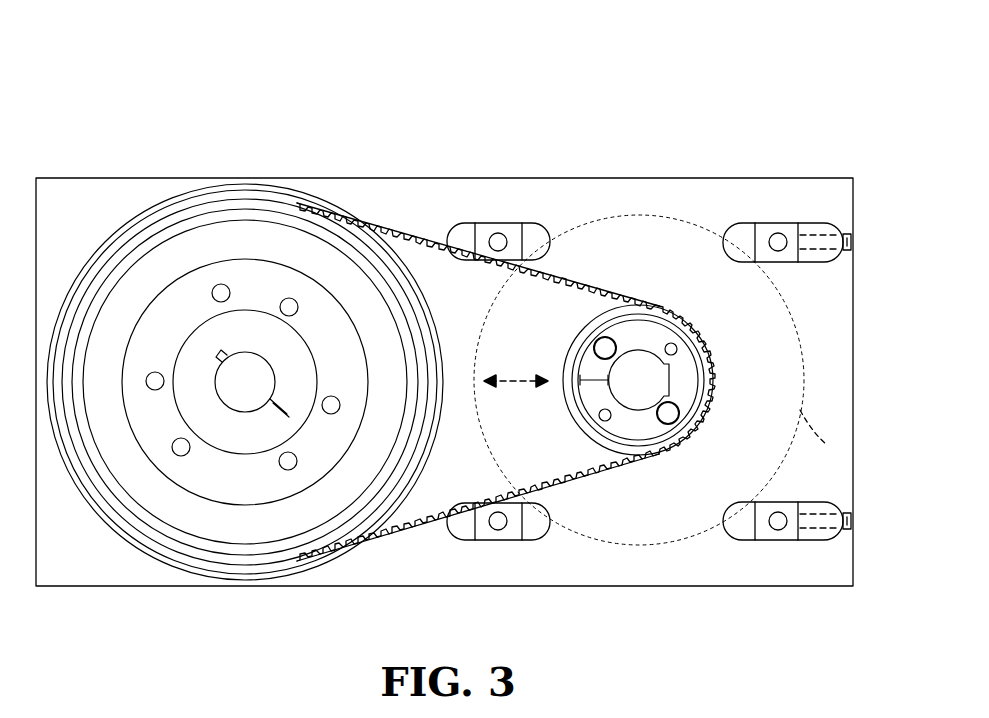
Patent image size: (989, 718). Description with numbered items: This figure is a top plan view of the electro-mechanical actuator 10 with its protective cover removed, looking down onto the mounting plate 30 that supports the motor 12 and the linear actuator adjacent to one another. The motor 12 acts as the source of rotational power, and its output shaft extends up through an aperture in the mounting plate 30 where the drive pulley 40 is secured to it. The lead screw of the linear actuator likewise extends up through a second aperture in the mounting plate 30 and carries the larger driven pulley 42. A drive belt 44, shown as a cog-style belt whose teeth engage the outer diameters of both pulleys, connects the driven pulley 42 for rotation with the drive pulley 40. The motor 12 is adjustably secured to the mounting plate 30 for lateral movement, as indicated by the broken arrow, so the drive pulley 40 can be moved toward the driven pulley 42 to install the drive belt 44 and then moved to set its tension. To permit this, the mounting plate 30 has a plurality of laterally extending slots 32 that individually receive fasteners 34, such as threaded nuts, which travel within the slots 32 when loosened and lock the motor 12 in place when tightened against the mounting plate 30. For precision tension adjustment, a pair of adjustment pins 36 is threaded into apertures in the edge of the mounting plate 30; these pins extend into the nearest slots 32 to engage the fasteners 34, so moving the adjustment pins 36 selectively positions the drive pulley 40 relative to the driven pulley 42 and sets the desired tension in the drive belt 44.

The electro-mechanical actuator 10 is at (648, 62).
The motor 12 is at (818, 438).
The mounting plate 30 is at (641, 210).
The slots 32 is at (548, 246).
The fasteners 34 is at (486, 243).
The adjustment pins 36 is at (854, 247).
The drive pulley 40 is at (688, 349).
The driven pulley 42 is at (207, 222).
The drive belt 44 is at (400, 233).